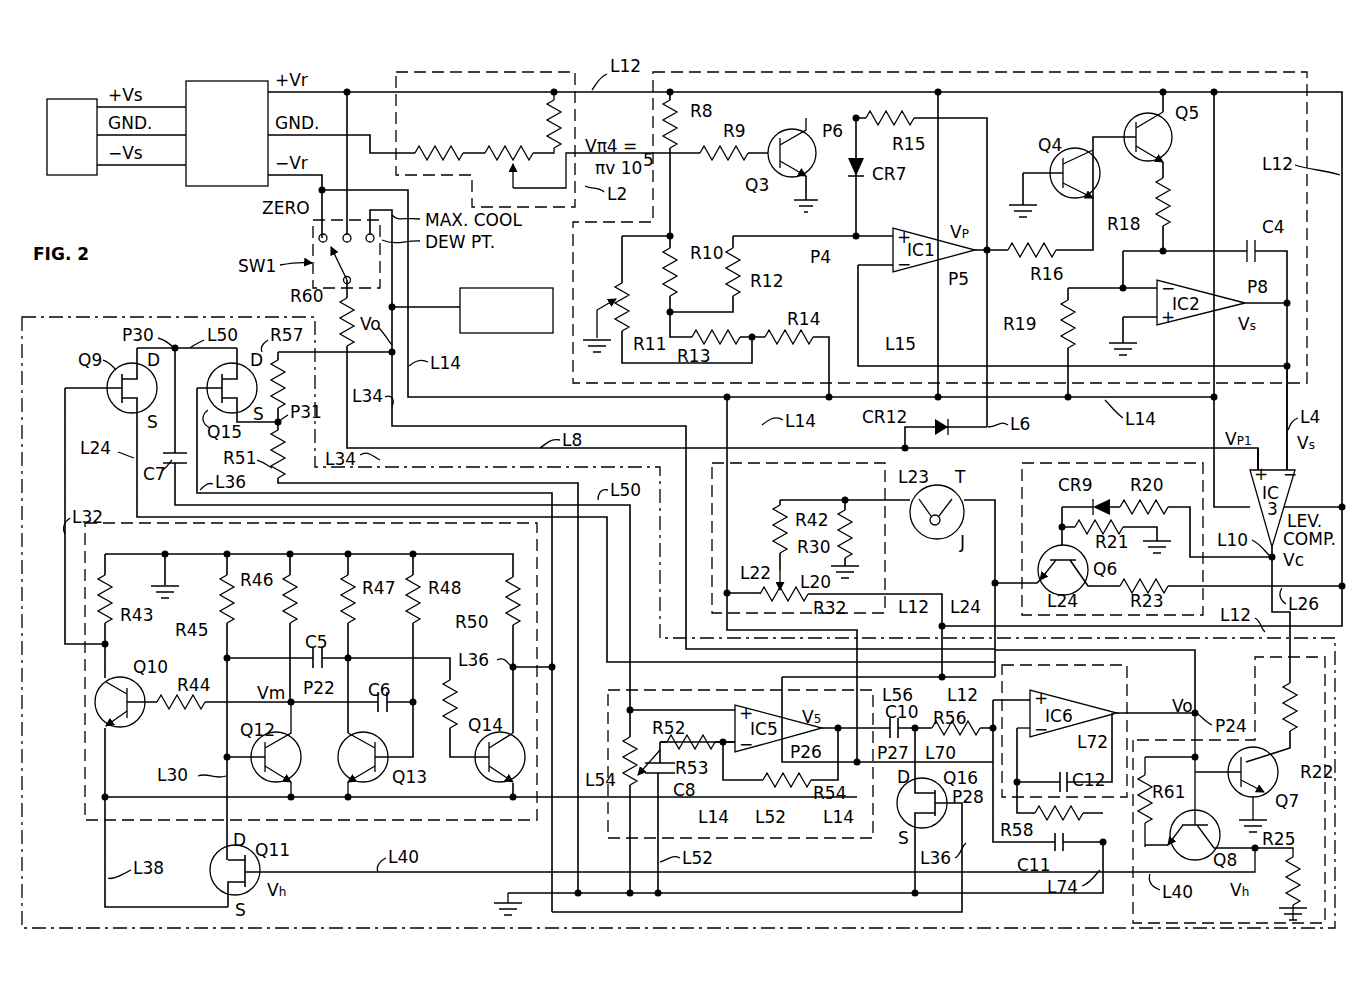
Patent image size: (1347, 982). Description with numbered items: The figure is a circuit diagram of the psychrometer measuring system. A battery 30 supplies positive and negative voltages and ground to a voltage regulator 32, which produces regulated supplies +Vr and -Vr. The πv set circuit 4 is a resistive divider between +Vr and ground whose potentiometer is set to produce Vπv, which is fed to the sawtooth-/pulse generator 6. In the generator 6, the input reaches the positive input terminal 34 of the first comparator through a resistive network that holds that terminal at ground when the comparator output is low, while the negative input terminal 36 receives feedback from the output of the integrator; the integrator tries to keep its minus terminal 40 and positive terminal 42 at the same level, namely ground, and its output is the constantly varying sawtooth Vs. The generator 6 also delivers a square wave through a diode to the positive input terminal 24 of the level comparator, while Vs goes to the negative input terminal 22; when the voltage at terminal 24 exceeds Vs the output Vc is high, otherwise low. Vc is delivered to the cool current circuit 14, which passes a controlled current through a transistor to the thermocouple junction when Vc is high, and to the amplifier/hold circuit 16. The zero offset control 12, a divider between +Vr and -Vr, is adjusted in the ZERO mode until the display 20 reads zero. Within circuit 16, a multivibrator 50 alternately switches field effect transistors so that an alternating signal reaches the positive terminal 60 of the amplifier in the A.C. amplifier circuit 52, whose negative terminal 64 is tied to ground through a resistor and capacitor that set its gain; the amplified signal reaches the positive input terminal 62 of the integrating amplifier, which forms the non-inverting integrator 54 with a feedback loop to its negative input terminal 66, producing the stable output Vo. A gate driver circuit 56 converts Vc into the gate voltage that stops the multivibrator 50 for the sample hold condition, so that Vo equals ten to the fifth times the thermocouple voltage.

The πv set circuit 4 is at (480, 68).
The sawtooth-/pulse generator 6 is at (1076, 70).
The zero offset control 12 is at (888, 538).
The cool current circuit 14 is at (1020, 514).
The amplifier/hold circuit 16 is at (200, 318).
The display 20 is at (503, 288).
The negative input terminal of IC3 22 is at (1289, 470).
The positive input terminal of IC3 24 is at (1257, 471).
The battery 30 is at (73, 176).
The voltage regulator 32 is at (213, 186).
The positive input terminal of IC1 34 is at (893, 228).
The negative input terminal of IC1 36 is at (890, 272).
The minus terminal of IC2 40 is at (1150, 290).
The positive terminal of IC2 42 is at (1152, 322).
The multivibrator 50 is at (120, 522).
The A.C. amplifier circuit 52 is at (805, 840).
The non-inverting integrator 54 is at (1127, 706).
The gate driver circuit 56 is at (1256, 702).
The positive terminal of IC5 60 is at (735, 708).
The positive input terminal of IC6 62 is at (1055, 693).
The negative terminal of IC5 64 is at (735, 750).
The negative input terminal of IC6 66 is at (1030, 738).